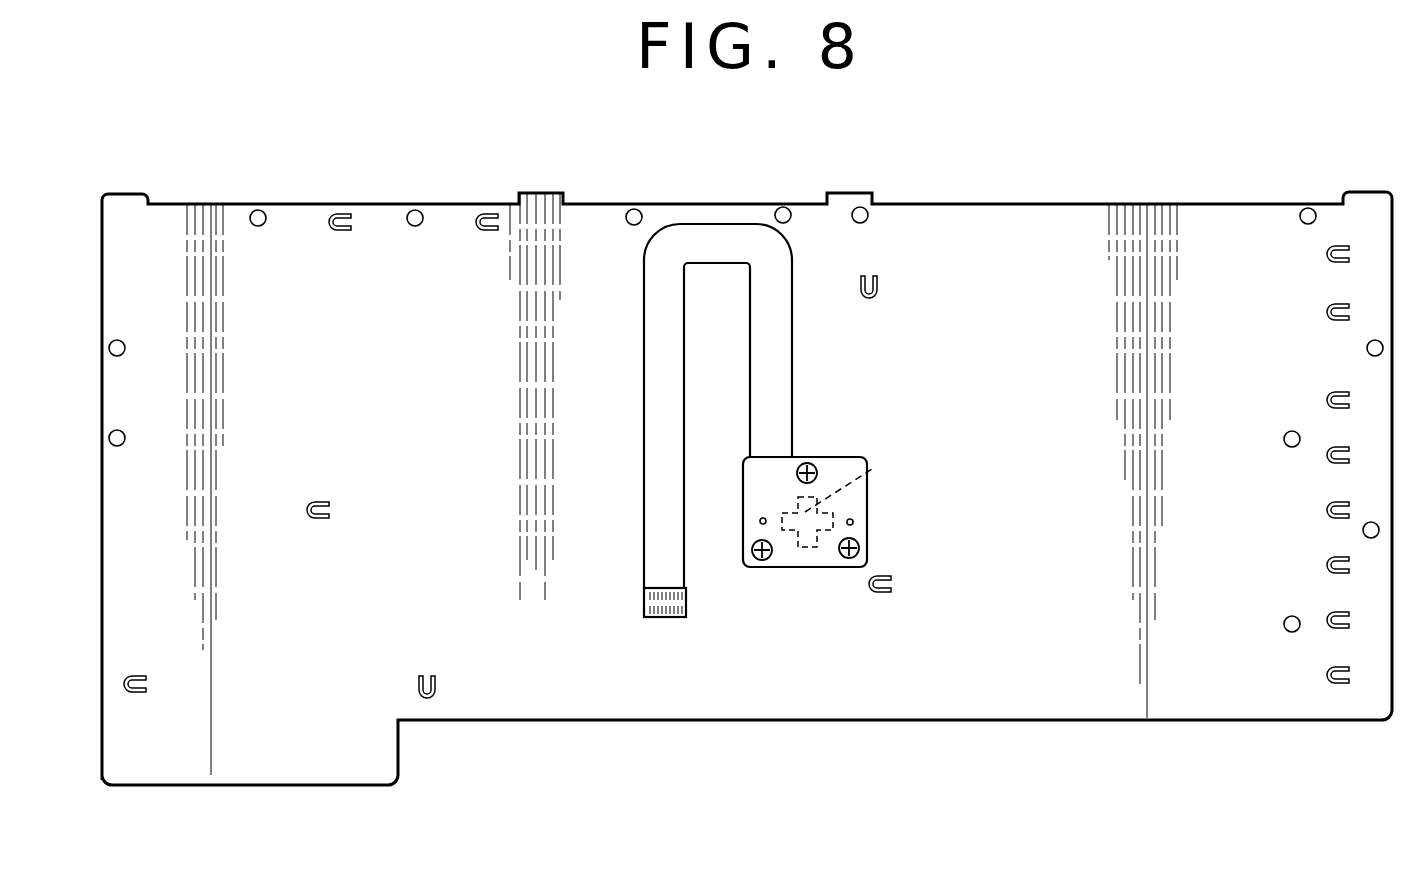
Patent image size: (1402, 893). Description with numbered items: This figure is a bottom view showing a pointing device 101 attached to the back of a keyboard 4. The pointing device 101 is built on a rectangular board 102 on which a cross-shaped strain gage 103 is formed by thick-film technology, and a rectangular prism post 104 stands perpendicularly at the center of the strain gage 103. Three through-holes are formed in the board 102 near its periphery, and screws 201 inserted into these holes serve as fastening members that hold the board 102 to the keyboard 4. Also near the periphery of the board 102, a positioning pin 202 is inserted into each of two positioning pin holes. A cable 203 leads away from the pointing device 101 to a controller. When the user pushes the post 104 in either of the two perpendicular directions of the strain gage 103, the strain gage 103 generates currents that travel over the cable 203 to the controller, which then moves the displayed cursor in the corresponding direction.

The keyboard 4 is at (1110, 700).
The pointing device 101 is at (787, 568).
The board 102 is at (833, 558).
The cross-shaped strain gage 103 is at (805, 547).
The post 104 is at (872, 480).
The screws 201 is at (811, 465).
The positioning pin 202 is at (854, 522).
The cable 203 is at (793, 345).